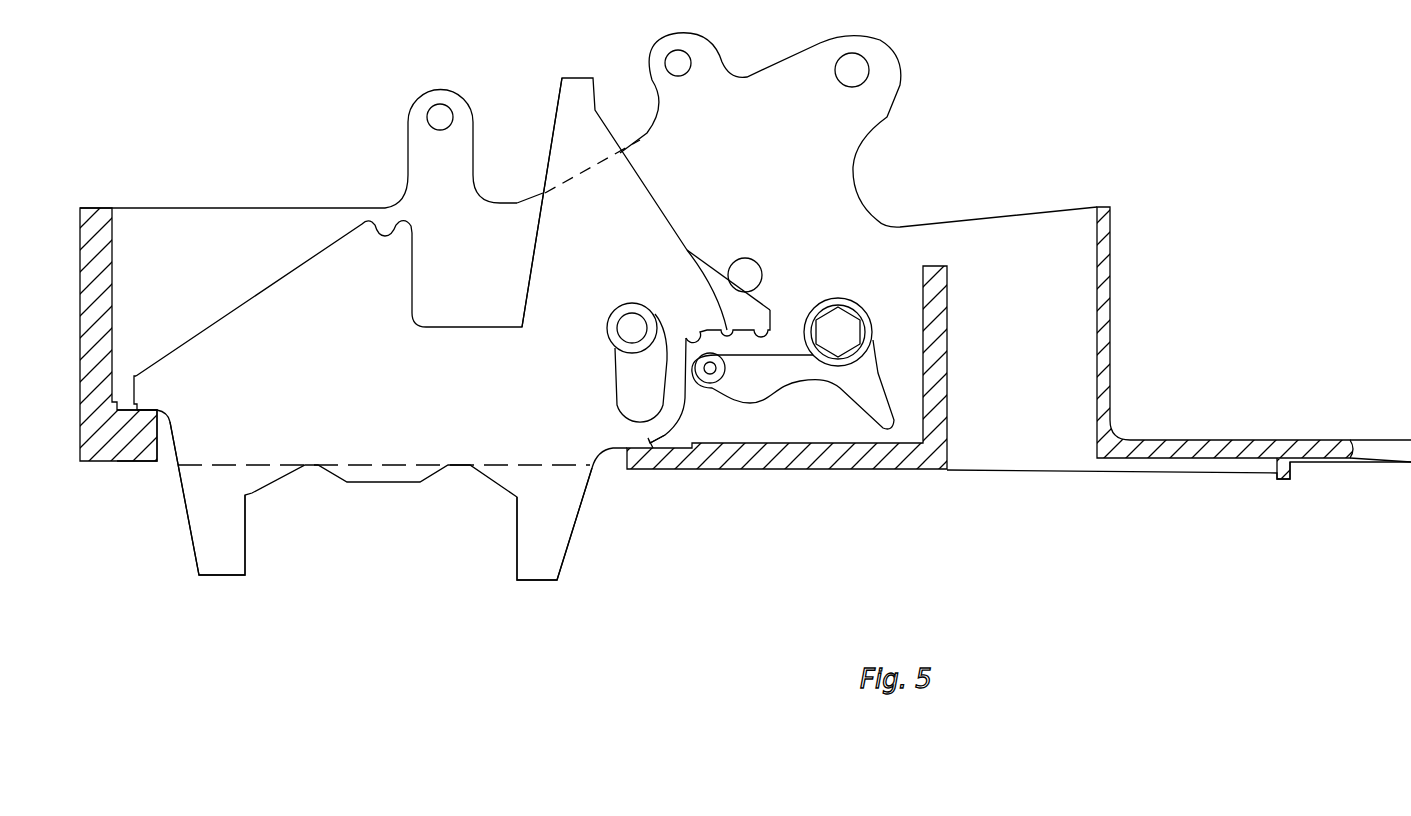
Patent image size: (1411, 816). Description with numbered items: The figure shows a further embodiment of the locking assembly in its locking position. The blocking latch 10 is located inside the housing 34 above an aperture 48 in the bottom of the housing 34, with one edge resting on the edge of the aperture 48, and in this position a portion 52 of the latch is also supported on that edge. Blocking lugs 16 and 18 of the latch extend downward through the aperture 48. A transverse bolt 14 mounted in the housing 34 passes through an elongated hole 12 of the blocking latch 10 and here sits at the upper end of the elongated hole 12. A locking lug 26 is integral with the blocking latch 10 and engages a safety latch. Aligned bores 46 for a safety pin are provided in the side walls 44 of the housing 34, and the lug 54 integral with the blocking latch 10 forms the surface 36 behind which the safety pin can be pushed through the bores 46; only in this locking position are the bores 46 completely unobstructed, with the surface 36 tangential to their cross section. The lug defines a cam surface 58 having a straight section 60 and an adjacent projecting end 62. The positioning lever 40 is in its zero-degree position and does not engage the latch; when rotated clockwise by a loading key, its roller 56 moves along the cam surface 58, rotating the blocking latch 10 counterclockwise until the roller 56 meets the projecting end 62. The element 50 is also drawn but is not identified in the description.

The blocking latch 10 is at (290, 348).
The elongated hole 12 is at (638, 390).
The transverse bolt 14 is at (630, 330).
The blocking lug 16 is at (210, 553).
The blocking lug 18 is at (535, 565).
The locking lug 26 is at (573, 150).
The housing 34 is at (92, 240).
The surface 36 is at (717, 275).
The positioning lever 40 is at (782, 350).
The side walls 44 is at (870, 228).
The bores 46 is at (745, 268).
The aperture 48 is at (162, 448).
The housing slot 50 is at (137, 377).
The portion 52 is at (655, 440).
The lug 54 is at (778, 306).
The roller 56 is at (705, 385).
The cam surface 58 is at (693, 340).
The straight section 60 is at (681, 241).
The projecting end 62 is at (780, 375).